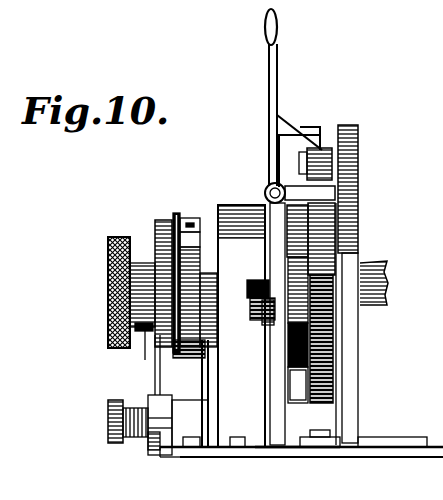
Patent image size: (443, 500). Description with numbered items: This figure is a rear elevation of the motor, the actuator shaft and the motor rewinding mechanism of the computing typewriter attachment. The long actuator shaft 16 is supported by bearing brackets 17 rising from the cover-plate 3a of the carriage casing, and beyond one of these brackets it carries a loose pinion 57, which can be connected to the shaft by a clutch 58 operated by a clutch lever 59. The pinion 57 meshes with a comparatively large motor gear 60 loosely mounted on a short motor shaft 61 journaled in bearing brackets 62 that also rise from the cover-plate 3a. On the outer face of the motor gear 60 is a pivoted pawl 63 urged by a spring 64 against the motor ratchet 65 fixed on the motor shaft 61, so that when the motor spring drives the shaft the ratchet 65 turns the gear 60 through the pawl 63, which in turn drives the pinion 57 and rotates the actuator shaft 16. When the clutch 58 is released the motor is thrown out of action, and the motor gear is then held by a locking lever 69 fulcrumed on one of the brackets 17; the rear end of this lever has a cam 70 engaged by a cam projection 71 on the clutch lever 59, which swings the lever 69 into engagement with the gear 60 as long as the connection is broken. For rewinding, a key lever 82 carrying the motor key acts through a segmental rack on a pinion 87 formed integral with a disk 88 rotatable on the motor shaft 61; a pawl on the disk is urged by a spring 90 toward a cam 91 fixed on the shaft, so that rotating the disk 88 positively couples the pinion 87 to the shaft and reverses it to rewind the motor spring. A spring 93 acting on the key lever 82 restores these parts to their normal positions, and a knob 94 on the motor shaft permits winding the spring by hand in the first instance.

The cover-plate 3a is at (278, 457).
The actuator shaft 16 is at (256, 296).
The bearing bracket 17 is at (358, 395).
The pinion 57 is at (335, 318).
The clutch 58 is at (267, 312).
The clutch lever 59 is at (269, 75).
The motor gear 60 is at (325, 217).
The motor shaft 61 is at (401, 283).
The bearing bracket 62 is at (210, 398).
The pawl 63 is at (290, 345).
The spring 64 is at (290, 390).
The motor ratchet 65 is at (298, 233).
The locking lever 69 is at (332, 166).
The cam 70 is at (314, 128).
The cam projection 71 is at (294, 118).
The key lever 82 is at (150, 356).
The pinion 87 is at (155, 235).
The disk 88 is at (177, 213).
The spring 90 is at (193, 218).
The cam 91 is at (190, 356).
The spring 93 is at (145, 442).
The knob 94 is at (108, 290).